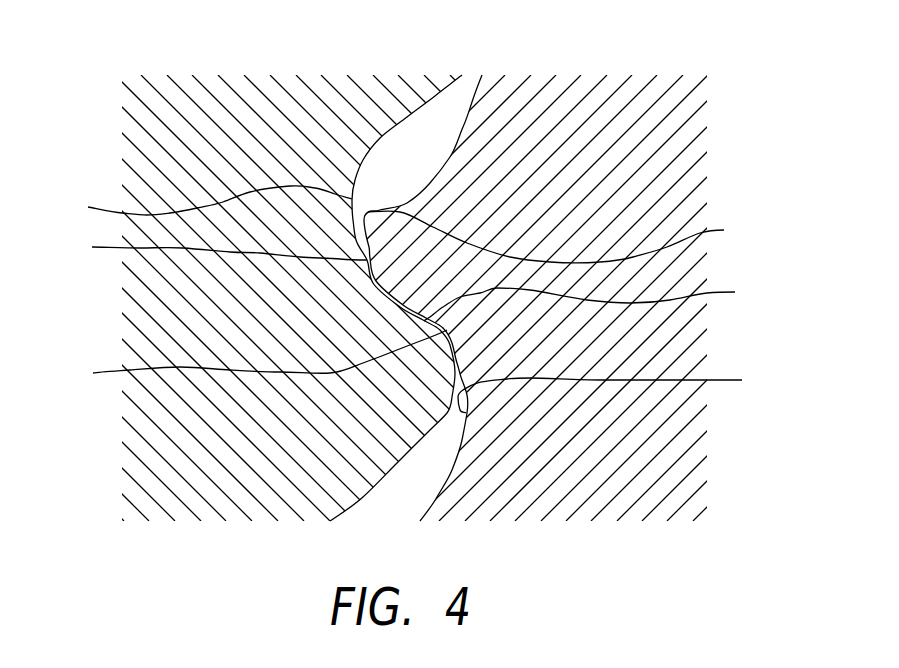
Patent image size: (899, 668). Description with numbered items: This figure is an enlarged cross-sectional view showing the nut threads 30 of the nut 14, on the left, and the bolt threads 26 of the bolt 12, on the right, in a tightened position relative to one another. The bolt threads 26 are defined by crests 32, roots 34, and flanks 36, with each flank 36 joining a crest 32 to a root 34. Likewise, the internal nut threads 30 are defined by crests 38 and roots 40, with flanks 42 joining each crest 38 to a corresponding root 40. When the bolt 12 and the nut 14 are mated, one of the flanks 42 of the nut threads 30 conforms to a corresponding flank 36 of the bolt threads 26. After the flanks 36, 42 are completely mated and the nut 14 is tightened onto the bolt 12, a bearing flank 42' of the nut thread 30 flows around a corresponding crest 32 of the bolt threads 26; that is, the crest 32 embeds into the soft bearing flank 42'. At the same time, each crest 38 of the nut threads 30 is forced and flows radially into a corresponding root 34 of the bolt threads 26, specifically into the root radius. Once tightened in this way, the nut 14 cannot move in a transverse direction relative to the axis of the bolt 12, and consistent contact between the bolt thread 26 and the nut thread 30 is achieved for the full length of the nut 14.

The bolt 12 is at (592, 107).
The nut 14 is at (258, 120).
The bolt threads 26 is at (547, 197).
The nut threads 30 is at (389, 402).
The crests 32 is at (561, 237).
The roots 34 is at (615, 390).
The flanks 36 is at (594, 299).
The crests 38 is at (248, 361).
The roots 40 is at (199, 203).
The flanks 42 is at (206, 248).
The bearing flanks 42' is at (204, 295).